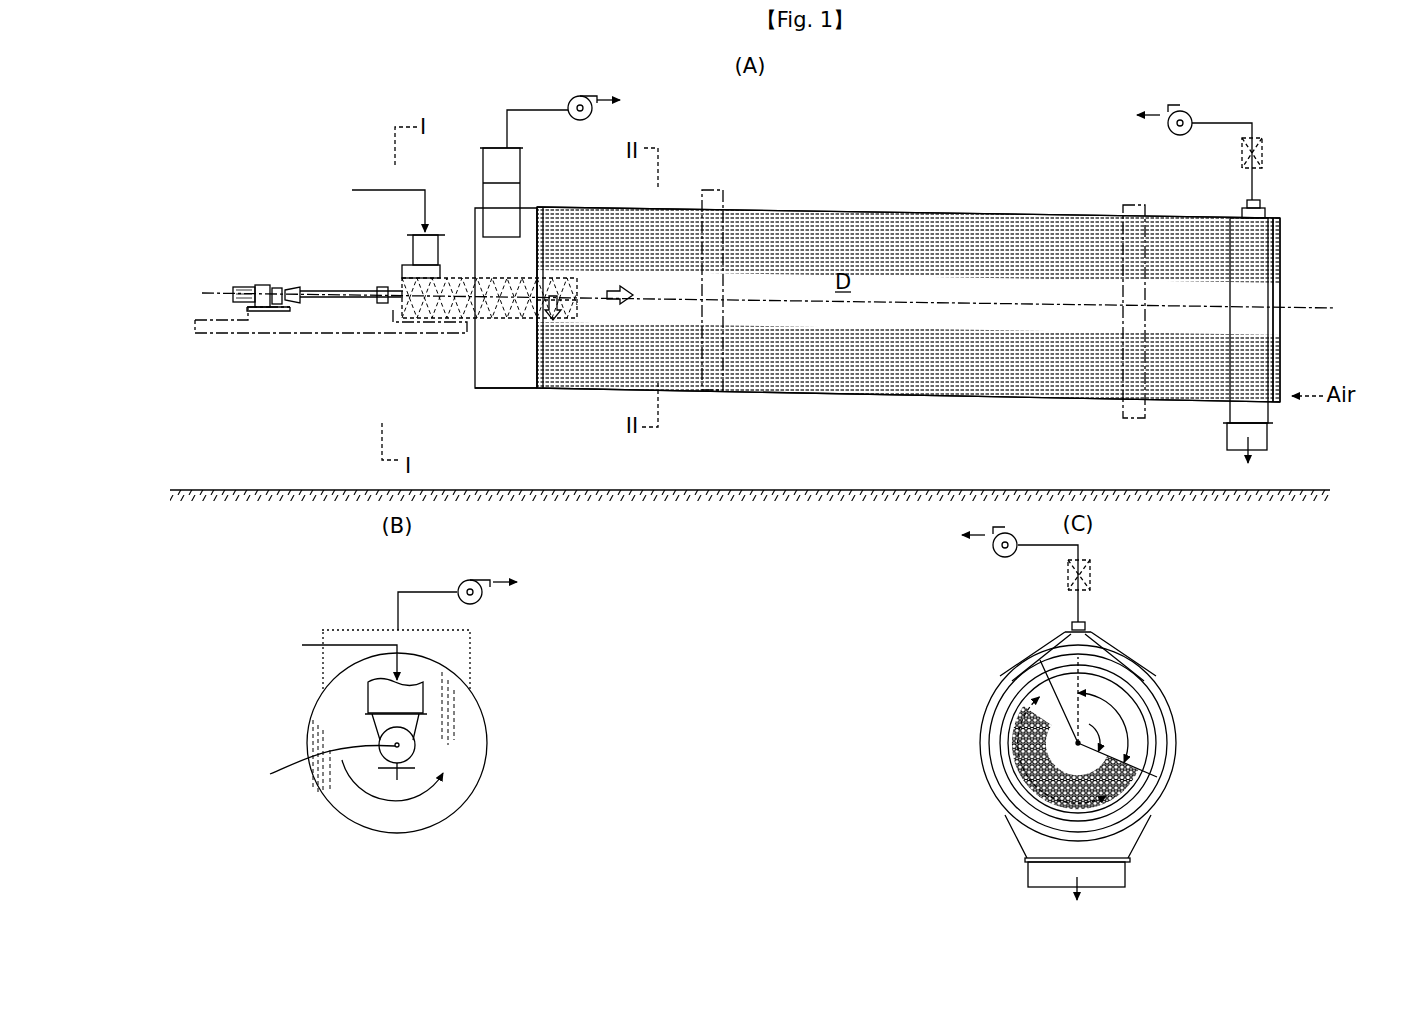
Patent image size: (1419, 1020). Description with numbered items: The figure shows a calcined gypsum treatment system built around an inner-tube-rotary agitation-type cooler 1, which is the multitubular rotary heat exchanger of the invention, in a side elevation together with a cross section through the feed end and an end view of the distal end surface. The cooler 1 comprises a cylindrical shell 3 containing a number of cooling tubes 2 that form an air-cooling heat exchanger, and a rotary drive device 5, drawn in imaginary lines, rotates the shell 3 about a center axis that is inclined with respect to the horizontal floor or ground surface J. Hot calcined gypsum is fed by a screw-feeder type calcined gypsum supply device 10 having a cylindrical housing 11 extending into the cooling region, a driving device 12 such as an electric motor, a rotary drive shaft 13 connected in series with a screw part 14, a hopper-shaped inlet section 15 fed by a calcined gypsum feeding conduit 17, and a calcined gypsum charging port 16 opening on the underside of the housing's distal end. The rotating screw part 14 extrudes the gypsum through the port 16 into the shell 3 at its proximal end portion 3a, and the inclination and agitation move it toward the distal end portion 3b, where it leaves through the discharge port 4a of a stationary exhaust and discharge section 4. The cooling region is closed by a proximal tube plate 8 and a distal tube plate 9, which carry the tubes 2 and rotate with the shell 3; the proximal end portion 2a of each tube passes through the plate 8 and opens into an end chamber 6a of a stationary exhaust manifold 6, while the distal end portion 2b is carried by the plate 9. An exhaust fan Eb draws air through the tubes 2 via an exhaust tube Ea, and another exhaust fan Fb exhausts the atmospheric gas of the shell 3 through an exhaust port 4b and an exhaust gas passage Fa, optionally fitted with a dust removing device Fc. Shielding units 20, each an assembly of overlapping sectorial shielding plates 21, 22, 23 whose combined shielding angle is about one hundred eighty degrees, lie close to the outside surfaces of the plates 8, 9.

The inner-tube-rotary agitation-type cooler 1 is at (863, 145).
The cooling tubes 2 is at (800, 210).
The proximal end portion of cooling tube 2a is at (532, 384).
The distal end portion of cooling tube 2b is at (1280, 368).
The cylindrical shell 3 is at (945, 210).
The proximal end portion of shell 3a is at (538, 395).
The distal end portion of shell 3b is at (1276, 410).
The exhaust and discharge section 4 is at (1273, 216).
The discharge port 4a is at (1227, 438).
The exhaust port 4b is at (1247, 205).
The rotary drive device 5 is at (712, 190).
The exhaust manifold 6 is at (522, 168).
The end chamber 6a is at (492, 380).
The tube plate 8 is at (530, 324).
The tube plate 9 is at (1278, 332).
The calcined gypsum supply device 10 is at (315, 205).
The cylindrical housing 11 is at (427, 323).
The driving device 12 is at (270, 285).
The rotary drive shaft 13 is at (335, 300).
The screw part 14 is at (440, 280).
The inlet section 15 is at (402, 272).
The calcined gypsum charging port 16 is at (568, 316).
The calcined gypsum feeding conduit 17 is at (413, 248).
The shielding unit 20 is at (1290, 247).
The sectorial shielding plate 21 is at (1155, 731).
The sectorial shielding plate 22 is at (1085, 666).
The sectorial shielding plate 23 is at (1035, 684).
The floor or ground surface J is at (252, 488).
The exhaust tube Ea is at (505, 111).
The exhaust fan Eb is at (590, 121).
The exhaust gas passage Fa is at (1258, 123).
The exhaust fan Fb is at (1182, 135).
The dust removing device Fc is at (1265, 155).